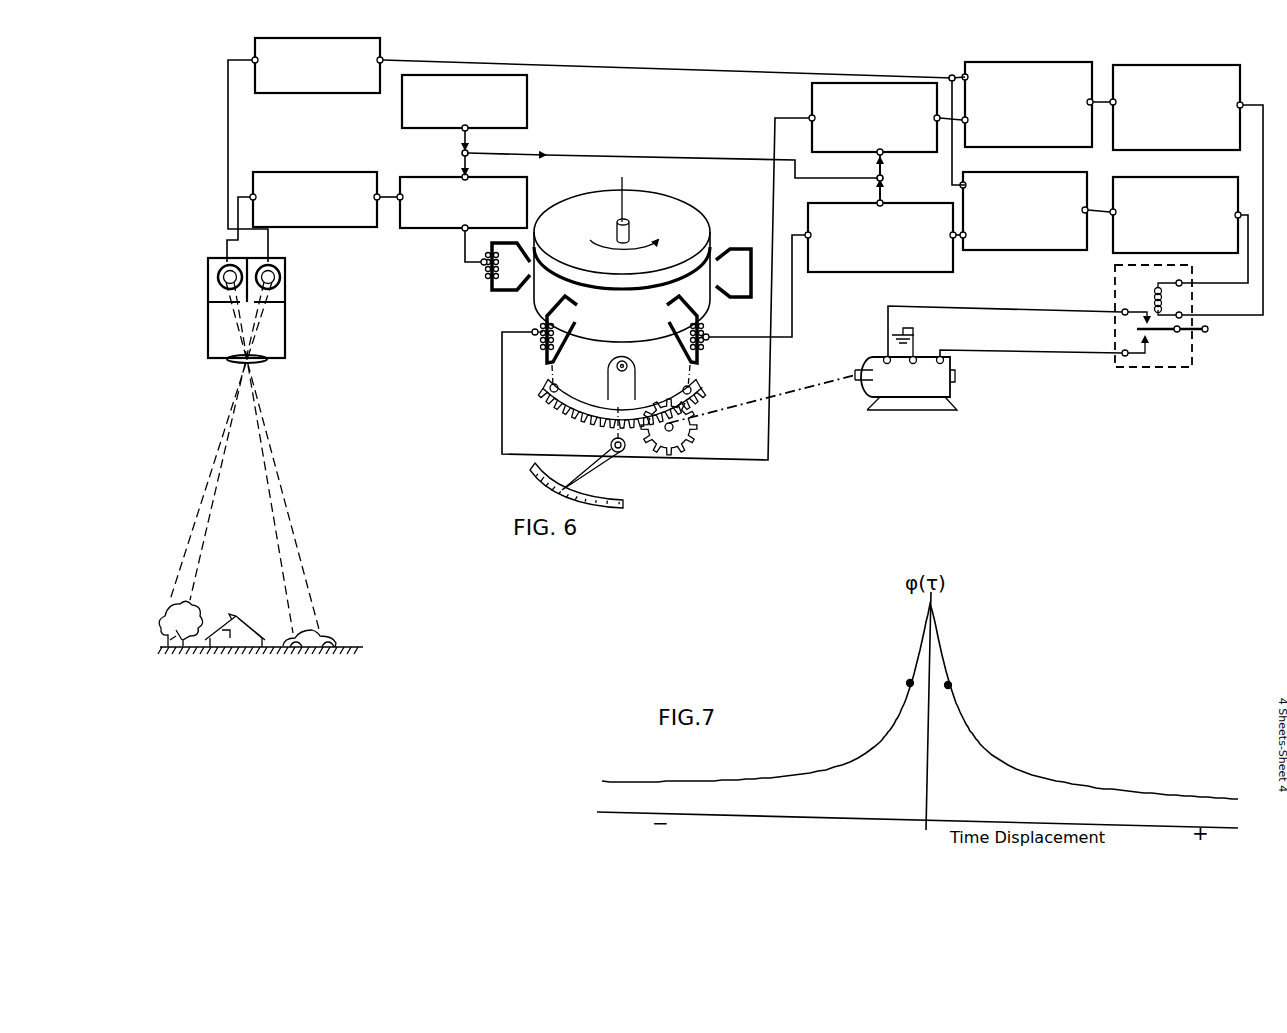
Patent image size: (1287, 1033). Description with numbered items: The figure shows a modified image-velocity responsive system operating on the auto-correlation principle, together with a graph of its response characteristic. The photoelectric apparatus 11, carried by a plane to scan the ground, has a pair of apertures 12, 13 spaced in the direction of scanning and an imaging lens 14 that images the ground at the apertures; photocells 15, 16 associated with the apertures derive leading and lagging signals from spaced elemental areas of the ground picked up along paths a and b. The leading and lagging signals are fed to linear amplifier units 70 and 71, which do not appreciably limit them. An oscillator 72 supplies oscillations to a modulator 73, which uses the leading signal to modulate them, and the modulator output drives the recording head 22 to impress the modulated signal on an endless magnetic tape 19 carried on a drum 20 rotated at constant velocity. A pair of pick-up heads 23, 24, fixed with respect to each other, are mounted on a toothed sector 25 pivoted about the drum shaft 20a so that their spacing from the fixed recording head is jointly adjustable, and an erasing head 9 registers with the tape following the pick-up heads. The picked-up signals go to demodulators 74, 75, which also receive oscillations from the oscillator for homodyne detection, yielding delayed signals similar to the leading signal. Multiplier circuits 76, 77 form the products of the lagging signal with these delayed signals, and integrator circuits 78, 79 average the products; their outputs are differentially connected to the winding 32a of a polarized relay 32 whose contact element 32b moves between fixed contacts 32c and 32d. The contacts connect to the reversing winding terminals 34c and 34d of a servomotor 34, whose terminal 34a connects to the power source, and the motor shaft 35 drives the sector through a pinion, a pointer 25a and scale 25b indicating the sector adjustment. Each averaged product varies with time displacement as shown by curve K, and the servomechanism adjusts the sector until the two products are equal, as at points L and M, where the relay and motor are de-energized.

In FIG. 6, the erasing head 9 is at (749, 250).
In FIG. 6, the photoelectric apparatus 11 is at (209, 336).
In FIG. 6, the aperture 12 is at (232, 308).
In FIG. 6, the aperture 13 is at (264, 312).
In FIG. 6, the imaging lens 14 is at (256, 362).
In FIG. 6, the photocell 15 is at (218, 282).
In FIG. 6, the photocell 16 is at (280, 282).
In FIG. 6, the endless magnetic tape 19 is at (699, 298).
In FIG. 6, the drum 20 is at (688, 218).
In FIG. 6, the shaft 20a is at (629, 224).
In FIG. 6, the recording head 22 is at (508, 278).
In FIG. 6, the pick-up head 23 is at (545, 345).
In FIG. 6, the pick-up head 24 is at (706, 342).
In FIG. 6, the toothed sector 25 is at (545, 394).
In FIG. 6, the pointer 25a is at (611, 441).
In FIG. 6, the scale 25b is at (552, 491).
In FIG. 6, the polarized relay 32 is at (1172, 358).
In FIG. 6, the winding 32a is at (1155, 299).
In FIG. 6, the contact element 32b is at (1165, 332).
In FIG. 6, the fixed contact 32c is at (1153, 340).
In FIG. 6, the fixed contact 32d is at (1137, 313).
In FIG. 6, the servomotor 34 is at (933, 388).
In FIG. 6, the motor terminal 34a is at (916, 356).
In FIG. 6, the reversing winding terminal 34c is at (949, 363).
In FIG. 6, the reversing winding terminal 34d is at (879, 362).
In FIG. 6, the shaft 35 is at (797, 390).
In FIG. 6, the amplifier unit 70 is at (335, 93).
In FIG. 6, the amplifier unit 71 is at (336, 173).
In FIG. 6, the oscillator 72 is at (527, 110).
In FIG. 6, the modulator 73 is at (440, 177).
In FIG. 6, the demodulator 74 is at (812, 101).
In FIG. 6, the demodulator 75 is at (853, 265).
In FIG. 6, the multiplier circuit 76 is at (1020, 141).
In FIG. 6, the multiplier circuit 77 is at (985, 244).
In FIG. 6, the integrator circuit 78 is at (1148, 143).
In FIG. 6, the integrator circuit 79 is at (1123, 248).
In FIG. 6, the path a is at (278, 468).
In FIG. 6, the ray b is at (206, 494).
In FIG. 7, the point L is at (906, 681).
In FIG. 7, the curve K is at (943, 660).
In FIG. 7, the point M is at (952, 685).